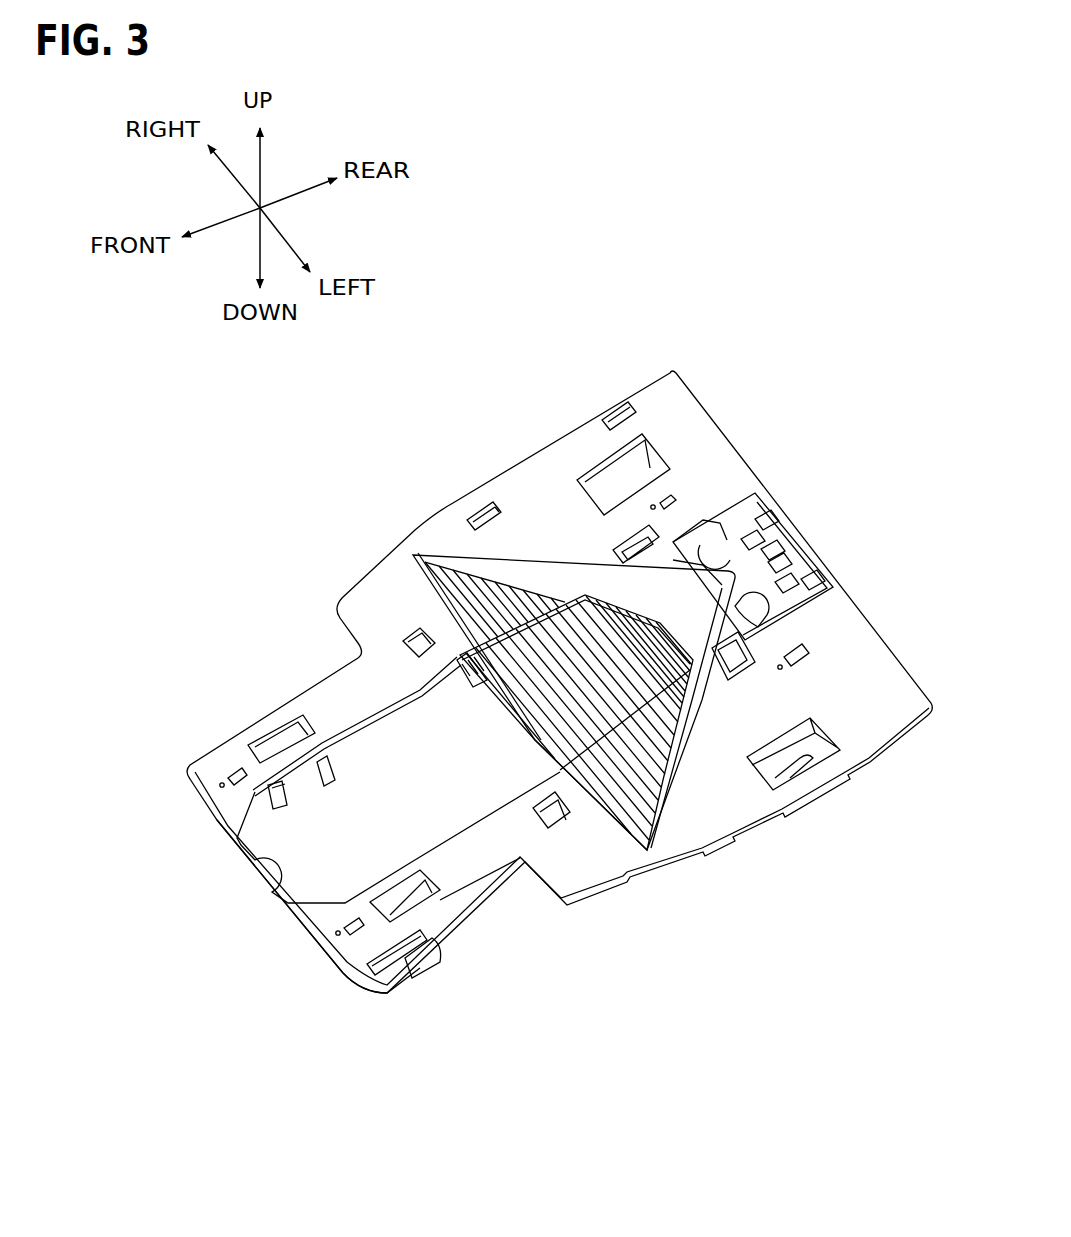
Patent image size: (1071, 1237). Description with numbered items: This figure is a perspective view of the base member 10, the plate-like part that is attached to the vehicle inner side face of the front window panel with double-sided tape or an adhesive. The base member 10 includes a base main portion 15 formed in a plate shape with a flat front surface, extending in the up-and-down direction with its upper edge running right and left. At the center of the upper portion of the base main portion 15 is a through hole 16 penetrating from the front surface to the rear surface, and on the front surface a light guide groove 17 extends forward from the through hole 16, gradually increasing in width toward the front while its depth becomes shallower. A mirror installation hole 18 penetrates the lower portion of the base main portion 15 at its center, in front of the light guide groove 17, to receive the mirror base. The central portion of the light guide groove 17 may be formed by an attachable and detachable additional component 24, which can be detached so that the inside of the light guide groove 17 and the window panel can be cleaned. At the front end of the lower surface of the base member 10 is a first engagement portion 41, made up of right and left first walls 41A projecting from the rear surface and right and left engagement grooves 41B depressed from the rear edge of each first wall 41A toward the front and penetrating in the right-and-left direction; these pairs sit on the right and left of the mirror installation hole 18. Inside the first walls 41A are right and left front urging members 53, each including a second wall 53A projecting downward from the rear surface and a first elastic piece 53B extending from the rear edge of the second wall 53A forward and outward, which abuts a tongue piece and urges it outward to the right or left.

The base member 10 is at (672, 353).
The base main portion 15 is at (865, 645).
The through hole 16 is at (720, 590).
The light guide groove 17 is at (562, 577).
The mirror installation hole 18 is at (271, 866).
The additional component 24 is at (533, 700).
The first engagement portion 41 is at (385, 999).
The first wall 41A is at (396, 983).
The engagement groove 41B is at (422, 970).
The front urging member 53 is at (330, 793).
The second wall 53A is at (300, 803).
The first elastic piece 53B is at (270, 753).